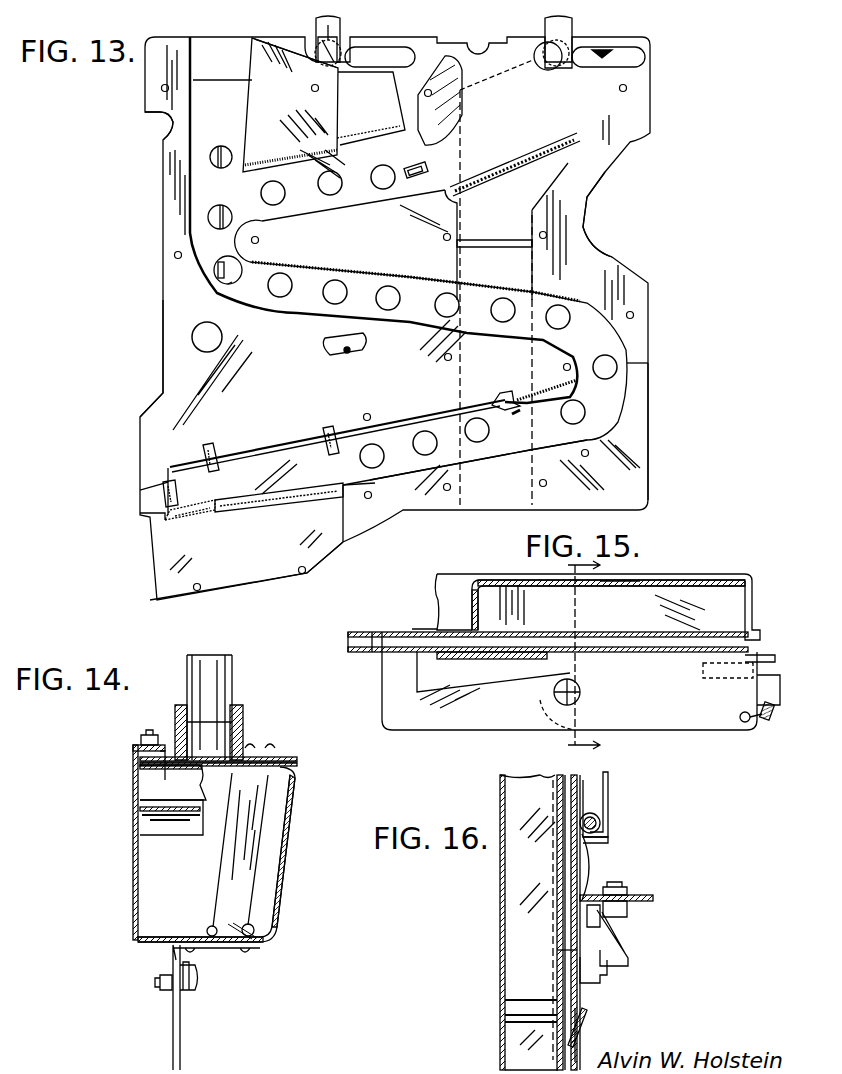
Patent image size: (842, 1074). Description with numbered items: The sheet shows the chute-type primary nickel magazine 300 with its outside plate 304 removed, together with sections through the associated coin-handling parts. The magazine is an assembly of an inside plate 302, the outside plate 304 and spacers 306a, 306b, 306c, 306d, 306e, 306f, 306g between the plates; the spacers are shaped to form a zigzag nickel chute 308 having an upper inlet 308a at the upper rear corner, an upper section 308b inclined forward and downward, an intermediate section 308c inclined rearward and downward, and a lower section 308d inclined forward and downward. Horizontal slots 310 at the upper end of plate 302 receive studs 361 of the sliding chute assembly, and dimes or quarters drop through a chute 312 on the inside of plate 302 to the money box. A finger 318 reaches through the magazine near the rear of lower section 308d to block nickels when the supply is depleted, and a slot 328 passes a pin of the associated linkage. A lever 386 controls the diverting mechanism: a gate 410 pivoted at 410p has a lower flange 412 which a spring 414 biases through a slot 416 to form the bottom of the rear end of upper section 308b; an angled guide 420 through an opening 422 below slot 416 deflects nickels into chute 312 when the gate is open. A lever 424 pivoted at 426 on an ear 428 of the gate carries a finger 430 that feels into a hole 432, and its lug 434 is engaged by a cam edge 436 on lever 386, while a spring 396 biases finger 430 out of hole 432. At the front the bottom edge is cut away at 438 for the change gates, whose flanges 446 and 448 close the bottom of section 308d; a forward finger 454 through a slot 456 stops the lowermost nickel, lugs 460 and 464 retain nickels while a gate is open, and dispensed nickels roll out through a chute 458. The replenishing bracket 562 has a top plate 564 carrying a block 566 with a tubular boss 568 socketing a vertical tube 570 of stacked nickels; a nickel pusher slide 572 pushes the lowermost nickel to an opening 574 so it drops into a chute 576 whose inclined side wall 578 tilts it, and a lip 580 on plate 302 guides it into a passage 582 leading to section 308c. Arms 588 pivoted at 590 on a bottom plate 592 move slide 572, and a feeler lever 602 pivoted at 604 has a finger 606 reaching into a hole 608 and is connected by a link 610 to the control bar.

In FIG. 13, the primary nickel magazine 300 is at (152, 144).
In FIG. 15, the primary nickel magazine 300 is at (356, 660).
In FIG. 16, the primary nickel magazine 300 is at (590, 779).
In FIG. 13, the inside plate 302 is at (205, 190).
In FIG. 15, the inside plate 302 is at (362, 632).
In FIG. 16, the inside plate 302 is at (558, 872).
In FIG. 15, the outside plate 304 is at (355, 648).
In FIG. 16, the outside plate 304 is at (580, 787).
In FIG. 13, the spacer 306a is at (168, 113).
In FIG. 13, the spacer 306b is at (268, 45).
In FIG. 13, the spacer 306c is at (445, 108).
In FIG. 13, the spacer 306d is at (266, 268).
In FIG. 13, the spacer 306e is at (586, 258).
In FIG. 13, the spacer 306f is at (195, 374).
In FIG. 13, the spacer 306g is at (630, 450).
In FIG. 13, the zigzag nickel chute 308 is at (278, 326).
In FIG. 13, the upper inlet 308a is at (550, 102).
In FIG. 13, the upper section 308b is at (284, 222).
In FIG. 15, the upper section 308b is at (605, 635).
In FIG. 16, the upper section 308b is at (556, 918).
In FIG. 13, the intermediate section 308c is at (430, 264).
In FIG. 13, the lower section 308d is at (478, 466).
In FIG. 13, the horizontal slots 310 is at (390, 55).
In FIG. 13, the chute 312 is at (460, 375).
In FIG. 15, the chute 312 is at (660, 576).
In FIG. 16, the chute 312 is at (506, 900).
In FIG. 13, the finger 318 is at (492, 405).
In FIG. 13, the slot 328 is at (347, 353).
In FIG. 13, the studs 361 is at (333, 50).
In FIG. 15, the lever 386 is at (748, 656).
In FIG. 16, the lever 386 is at (608, 820).
In FIG. 15, the spring 396 is at (750, 720).
In FIG. 15, the gate 410 is at (485, 661).
In FIG. 16, the gate 410 is at (585, 880).
In FIG. 16, the pivot 410p is at (600, 825).
In FIG. 13, the lower flange 412 is at (545, 150).
In FIG. 15, the lower flange 412 is at (520, 642).
In FIG. 16, the lower flange 412 is at (567, 952).
In FIG. 16, the spring 414 is at (608, 843).
In FIG. 16, the slot 416 is at (590, 972).
In FIG. 13, the angled guide 420 is at (492, 249).
In FIG. 16, the angled guide 420 is at (585, 1020).
In FIG. 16, the opening 422 is at (582, 1038).
In FIG. 15, the lever 424 is at (660, 715).
In FIG. 16, the lever 424 is at (658, 896).
In FIG. 15, the pivot 426 is at (582, 698).
In FIG. 16, the pivot 426 is at (630, 887).
In FIG. 15, the ear 428 is at (540, 708).
In FIG. 16, the ear 428 is at (648, 906).
In FIG. 13, the finger 430 is at (410, 177).
In FIG. 15, the finger 430 is at (392, 675).
In FIG. 13, the hole 432 is at (410, 168).
In FIG. 15, the hole 432 is at (382, 640).
In FIG. 15, the lug 434 is at (700, 670).
In FIG. 16, the lug 434 is at (602, 920).
In FIG. 15, the cam edge 436 is at (773, 710).
In FIG. 16, the cam edge 436 is at (630, 942).
In FIG. 13, the cut-away bottom edge 438 is at (150, 515).
In FIG. 13, the lower flange 446 is at (190, 522).
In FIG. 13, the lower flange 448 is at (280, 512).
In FIG. 13, the forward finger 454 is at (160, 500).
In FIG. 13, the slot 456 is at (167, 480).
In FIG. 13, the chute 458 is at (170, 580).
In FIG. 13, the lug 460 is at (215, 450).
In FIG. 13, the lug 464 is at (330, 428).
In FIG. 14, the bracket 562 is at (290, 832).
In FIG. 14, the top plate 564 is at (290, 764).
In FIG. 14, the block 566 is at (285, 757).
In FIG. 14, the tubular boss 568 is at (244, 720).
In FIG. 14, the vertical tube 570 is at (233, 672).
In FIG. 14, the nickel pusher slide 572 is at (300, 760).
In FIG. 14, the opening 574 is at (165, 778).
In FIG. 14, the chute 576 is at (150, 814).
In FIG. 14, the inclined side wall 578 is at (188, 812).
In FIG. 13, the lip 580 is at (215, 48).
In FIG. 13, the passage 582 is at (248, 100).
In FIG. 14, the arms 588 is at (255, 880).
In FIG. 14, the pivot 590 is at (262, 934).
In FIG. 14, the bottom plate 592 is at (266, 948).
In FIG. 13, the feeler lever 602 is at (228, 208).
In FIG. 14, the feeler lever 602 is at (181, 1040).
In FIG. 14, the pivot 604 is at (158, 981).
In FIG. 13, the finger 606 is at (216, 270).
In FIG. 13, the hole 608 is at (226, 283).
In FIG. 14, the link 610 is at (190, 974).